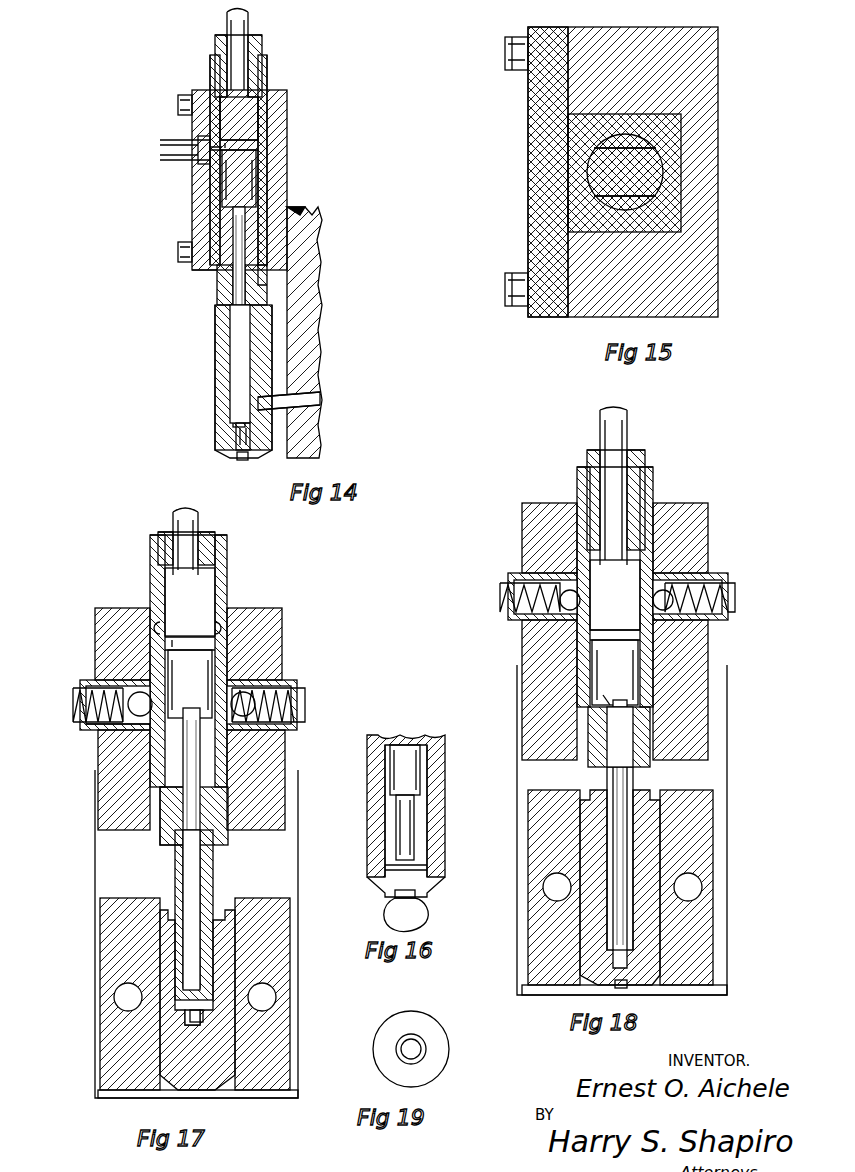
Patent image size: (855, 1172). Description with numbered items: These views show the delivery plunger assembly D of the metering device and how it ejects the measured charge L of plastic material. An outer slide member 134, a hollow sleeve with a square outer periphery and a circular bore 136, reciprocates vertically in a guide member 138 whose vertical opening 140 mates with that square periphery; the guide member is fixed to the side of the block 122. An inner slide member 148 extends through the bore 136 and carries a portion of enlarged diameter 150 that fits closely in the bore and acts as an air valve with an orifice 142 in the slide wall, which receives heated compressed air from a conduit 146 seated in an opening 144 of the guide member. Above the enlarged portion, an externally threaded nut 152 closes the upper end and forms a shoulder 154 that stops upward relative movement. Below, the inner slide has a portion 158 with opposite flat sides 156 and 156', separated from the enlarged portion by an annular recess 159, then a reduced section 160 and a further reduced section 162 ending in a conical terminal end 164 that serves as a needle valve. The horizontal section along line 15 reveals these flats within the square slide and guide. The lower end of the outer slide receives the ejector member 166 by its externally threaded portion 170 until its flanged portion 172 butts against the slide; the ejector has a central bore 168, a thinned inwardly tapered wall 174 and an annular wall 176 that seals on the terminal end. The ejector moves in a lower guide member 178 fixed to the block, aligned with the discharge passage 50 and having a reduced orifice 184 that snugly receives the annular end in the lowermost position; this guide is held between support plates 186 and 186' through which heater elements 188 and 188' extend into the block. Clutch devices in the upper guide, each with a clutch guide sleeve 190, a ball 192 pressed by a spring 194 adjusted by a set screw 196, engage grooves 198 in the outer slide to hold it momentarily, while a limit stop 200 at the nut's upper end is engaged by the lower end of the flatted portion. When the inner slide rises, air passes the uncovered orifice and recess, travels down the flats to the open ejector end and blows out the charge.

In FIG. 14, the inner slide member 148 is at (246, 28).
In FIG. 17, the inner slide member 148 is at (200, 528).
In FIG. 18, the inner slide member 148 is at (622, 437).
In FIG. 14, the externally threaded nut 152 is at (215, 45).
In FIG. 18, the externally threaded nut 152 is at (587, 455).
In FIG. 14, the outer slide member 134 is at (268, 68).
In FIG. 15, the outer slide member 134 is at (680, 150).
In FIG. 17, the outer slide member 134 is at (228, 563).
In FIG. 18, the outer slide member 134 is at (653, 487).
In FIG. 14, the orifice 142 is at (212, 135).
In FIG. 14, the conduit 146 is at (165, 141).
In FIG. 14, the opening 144 is at (200, 164).
In FIG. 14, the portion of enlarged diameter 150 is at (240, 125).
In FIG. 17, the portion of enlarged diameter 150 is at (177, 611).
In FIG. 18, the portion of enlarged diameter 150 is at (615, 595).
In FIG. 14, the annular recess 159 is at (258, 145).
In FIG. 17, the annular recess 159 is at (215, 640).
In FIG. 18, the annular recess 159 is at (590, 636).
In FIG. 14, the portion of length with flat sides 158 is at (245, 175).
In FIG. 15, the portion of length with flat sides 158 is at (655, 168).
In FIG. 17, the portion of length with flat sides 158 is at (177, 688).
In FIG. 18, the portion of length with flat sides 158 is at (604, 661).
In FIG. 14, the section line 15— 15 is at (187, 185).
In FIG. 14, the guide member 138 is at (192, 236).
In FIG. 15, the guide member 138 is at (712, 260).
In FIG. 17, the guide member 138 is at (105, 622).
In FIG. 18, the guide member 138 is at (522, 527).
In FIG. 14, the externally threaded portion 170 is at (200, 268).
In FIG. 14, the flanged portion 172 is at (218, 288).
In FIG. 17, the flanged portion 172 is at (168, 816).
In FIG. 14, the section of reduced diameter 160 is at (240, 316).
In FIG. 17, the section of reduced diameter 160 is at (200, 870).
In FIG. 16, the section of reduced diameter 160 is at (412, 780).
In FIG. 18, the section of reduced diameter 160 is at (620, 825).
In FIG. 14, the block 122 is at (305, 330).
In FIG. 17, the block 122 is at (290, 868).
In FIG. 18, the block 122 is at (710, 757).
In FIG. 14, the delivery plunger assembly D is at (202, 342).
In FIG. 17, the delivery plunger assembly D is at (165, 875).
In FIG. 18, the delivery plunger assembly D is at (575, 771).
In FIG. 14, the delivery plunger or ejector member 166 is at (232, 357).
In FIG. 17, the delivery plunger or ejector member 166 is at (178, 895).
In FIG. 16, the delivery plunger or ejector member 166 is at (445, 745).
In FIG. 18, the delivery plunger or ejector member 166 is at (640, 785).
In FIG. 14, the lower guide member 178 is at (218, 387).
In FIG. 17, the lower guide member 178 is at (225, 912).
In FIG. 18, the lower guide member 178 is at (650, 800).
In FIG. 14, the discharge passage 50 is at (322, 400).
In FIG. 14, the section of further reduced diameter 162 is at (236, 433).
In FIG. 16, the section of further reduced diameter 162 is at (408, 832).
In FIG. 14, the annular wall 176 is at (246, 460).
In FIG. 17, the annular wall 176 is at (197, 1029).
In FIG. 16, the annular wall 176 is at (418, 893).
In FIG. 19, the annular wall 176 is at (418, 1036).
In FIG. 18, the annular wall 176 is at (621, 984).
In FIG. 15, the flat side 156 is at (538, 129).
In FIG. 15, the flat side 156' is at (544, 212).
In FIG. 15, the circular bore 136 is at (645, 130).
In FIG. 15, the vertical opening 140 is at (648, 222).
In FIG. 17, the shoulder 154 is at (158, 560).
In FIG. 17, the grooves 198 is at (160, 626).
In FIG. 18, the grooves 198 is at (580, 596).
In FIG. 17, the annular clutch guide sleeve 190 is at (85, 683).
In FIG. 17, the ball 192 is at (128, 712).
In FIG. 17, the set screw 196 is at (73, 702).
In FIG. 17, the spring 194 is at (100, 734).
In FIG. 17, the support plate 186 is at (102, 994).
In FIG. 18, the support plate 186 is at (528, 887).
In FIG. 17, the support plate 186' is at (292, 994).
In FIG. 18, the support plate 186' is at (717, 887).
In FIG. 17, the heater element 188 is at (98, 1015).
In FIG. 18, the heater element 188 is at (557, 887).
In FIG. 17, the heater element 188' is at (299, 999).
In FIG. 18, the heater element 188' is at (688, 887).
In FIG. 17, the orifice 184 is at (200, 1094).
In FIG. 18, the orifice 184 is at (624, 990).
In FIG. 16, the central bore 168 is at (386, 810).
In FIG. 16, the terminal end 164 is at (425, 866).
In FIG. 19, the terminal end 164 is at (415, 1050).
In FIG. 16, the inwardly tapered wall 174 is at (385, 885).
In FIG. 19, the inwardly tapered wall 174 is at (438, 1036).
In FIG. 16, the measured charge L is at (428, 918).
In FIG. 18, the limit stop 200 is at (618, 690).